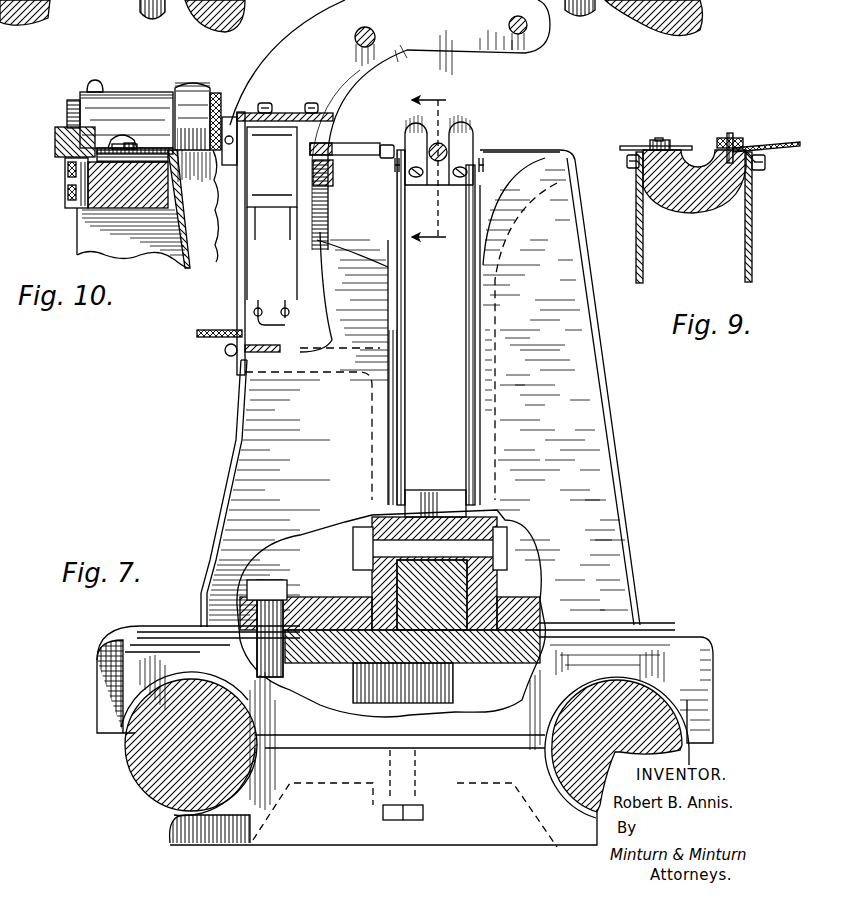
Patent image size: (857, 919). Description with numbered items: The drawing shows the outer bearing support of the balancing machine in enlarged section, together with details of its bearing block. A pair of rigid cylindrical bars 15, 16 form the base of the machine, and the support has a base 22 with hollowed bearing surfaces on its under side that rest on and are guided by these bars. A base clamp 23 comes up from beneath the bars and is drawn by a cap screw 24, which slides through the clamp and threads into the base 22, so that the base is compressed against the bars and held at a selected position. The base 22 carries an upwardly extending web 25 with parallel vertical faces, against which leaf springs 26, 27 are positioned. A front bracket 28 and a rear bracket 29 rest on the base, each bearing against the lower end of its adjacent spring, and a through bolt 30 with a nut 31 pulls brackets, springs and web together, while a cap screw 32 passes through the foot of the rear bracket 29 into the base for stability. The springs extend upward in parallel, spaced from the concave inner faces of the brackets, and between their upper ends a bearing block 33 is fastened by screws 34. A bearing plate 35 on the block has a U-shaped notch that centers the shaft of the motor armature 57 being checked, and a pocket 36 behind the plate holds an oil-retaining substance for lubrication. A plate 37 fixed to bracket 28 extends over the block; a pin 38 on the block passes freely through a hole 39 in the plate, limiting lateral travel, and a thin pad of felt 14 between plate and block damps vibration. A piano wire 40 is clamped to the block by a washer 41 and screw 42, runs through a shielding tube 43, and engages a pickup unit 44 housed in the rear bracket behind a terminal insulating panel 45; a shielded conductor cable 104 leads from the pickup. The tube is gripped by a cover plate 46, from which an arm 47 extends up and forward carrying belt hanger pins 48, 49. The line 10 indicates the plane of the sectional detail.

In FIG. 7, the axis line 10 is at (442, 169).
In FIG. 9, the thin pad of felt 14 is at (758, 157).
In FIG. 7, the bar 15 is at (660, 716).
In FIG. 7, the bar 16 is at (145, 770).
In FIG. 7, the base 22 is at (702, 668).
In FIG. 7, the base clamp 23 is at (495, 846).
In FIG. 7, the cap screw 24 is at (383, 755).
In FIG. 7, the web 25 is at (430, 500).
In FIG. 7, the leaf spring 26 is at (466, 424).
In FIG. 9, the leaf spring 26 is at (752, 250).
In FIG. 7, the leaf spring 27 is at (405, 390).
In FIG. 9, the leaf spring 27 is at (645, 252).
In FIG. 10, the leaf spring 27 is at (77, 247).
In FIG. 7, the front bracket 28 is at (588, 372).
In FIG. 7, the rear bracket 29 is at (233, 440).
In FIG. 10, the rear bracket 29 is at (190, 263).
In FIG. 7, the through bolt 30 is at (506, 545).
In FIG. 7, the nut 31 is at (352, 553).
In FIG. 7, the cap screw 32 is at (282, 589).
In FIG. 9, the bearing block 33 is at (705, 200).
In FIG. 10, the bearing block 33 is at (95, 208).
In FIG. 7, the screw 34 is at (396, 175).
In FIG. 9, the screw 34 is at (630, 168).
In FIG. 7, the bearing plate 35 is at (466, 135).
In FIG. 10, the bearing plate 35 is at (67, 110).
In FIG. 10, the pocket 36 is at (65, 192).
In FIG. 7, the plate 37 is at (565, 150).
In FIG. 9, the plate 37 is at (785, 139).
In FIG. 9, the pin 38 is at (740, 138).
In FIG. 9, the hole 39 is at (728, 133).
In FIG. 7, the piano wire 40 is at (298, 107).
In FIG. 9, the piano wire 40 is at (625, 146).
In FIG. 10, the piano wire 40 is at (112, 140).
In FIG. 9, the washer 41 is at (668, 140).
In FIG. 10, the washer 41 is at (138, 146).
In FIG. 9, the screw 42 is at (655, 139).
In FIG. 10, the screw 42 is at (142, 127).
In FIG. 7, the tube 43 is at (350, 145).
In FIG. 10, the tube 43 is at (108, 145).
In FIG. 7, the pickup unit 44 is at (258, 262).
In FIG. 7, the terminal insulating panel 45 is at (226, 350).
In FIG. 7, the cover plate 46 is at (320, 124).
In FIG. 10, the cover plate 46 is at (160, 92).
In FIG. 7, the arm 47 is at (409, 60).
In FIG. 10, the arm 47 is at (193, 86).
In FIG. 7, the belt hanger pin 48 is at (360, 35).
In FIG. 7, the belt hanger pin 49 is at (510, 24).
In FIG. 7, the motor armature 57 is at (428, 145).
In FIG. 10, the motor armature 57 is at (55, 147).
In FIG. 7, the shielded conductor cable 104 is at (198, 334).